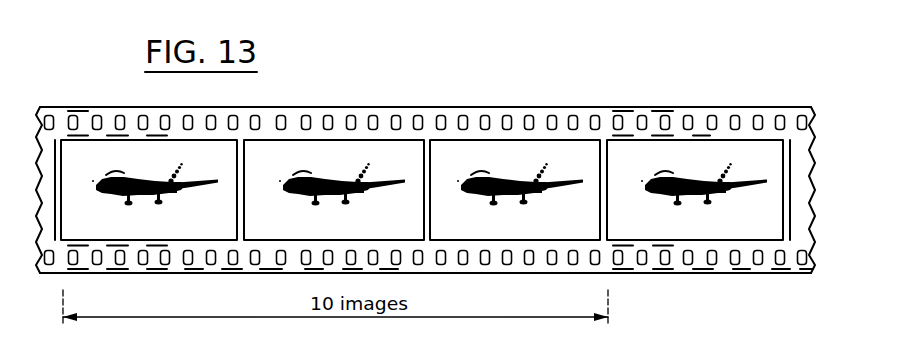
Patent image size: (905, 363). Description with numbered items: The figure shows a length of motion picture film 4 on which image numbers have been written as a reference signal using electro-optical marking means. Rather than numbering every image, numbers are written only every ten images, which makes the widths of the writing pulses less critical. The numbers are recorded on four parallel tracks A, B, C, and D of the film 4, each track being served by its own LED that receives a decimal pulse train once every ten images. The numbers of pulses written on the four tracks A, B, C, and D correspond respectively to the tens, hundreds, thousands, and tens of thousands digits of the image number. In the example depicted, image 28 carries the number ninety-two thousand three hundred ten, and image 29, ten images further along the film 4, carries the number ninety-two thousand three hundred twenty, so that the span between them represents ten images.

The motion picture film 4 is at (492, 290).
The image 28 is at (172, 232).
The image 29 is at (732, 230).
The track A is at (62, 113).
The track B is at (63, 130).
The track C is at (63, 250).
The track D is at (62, 272).